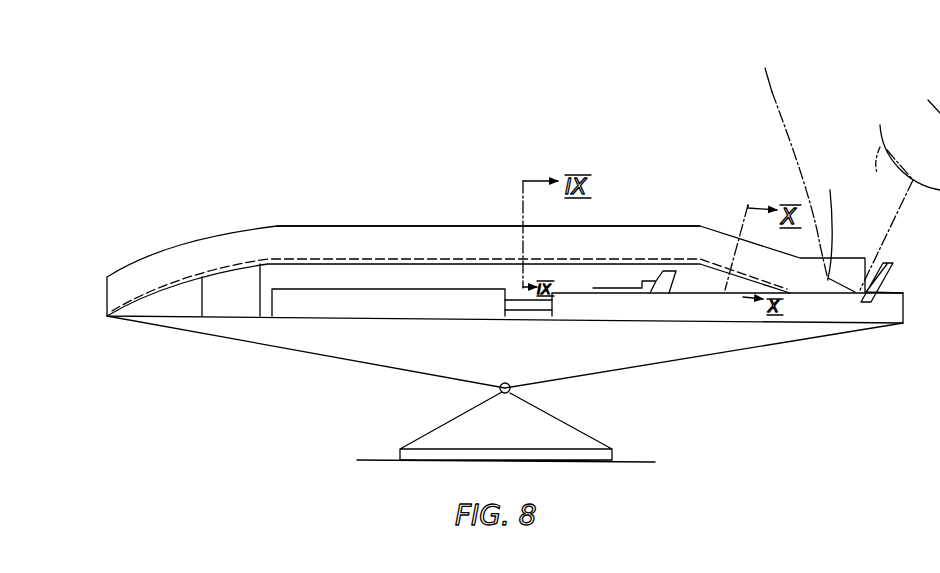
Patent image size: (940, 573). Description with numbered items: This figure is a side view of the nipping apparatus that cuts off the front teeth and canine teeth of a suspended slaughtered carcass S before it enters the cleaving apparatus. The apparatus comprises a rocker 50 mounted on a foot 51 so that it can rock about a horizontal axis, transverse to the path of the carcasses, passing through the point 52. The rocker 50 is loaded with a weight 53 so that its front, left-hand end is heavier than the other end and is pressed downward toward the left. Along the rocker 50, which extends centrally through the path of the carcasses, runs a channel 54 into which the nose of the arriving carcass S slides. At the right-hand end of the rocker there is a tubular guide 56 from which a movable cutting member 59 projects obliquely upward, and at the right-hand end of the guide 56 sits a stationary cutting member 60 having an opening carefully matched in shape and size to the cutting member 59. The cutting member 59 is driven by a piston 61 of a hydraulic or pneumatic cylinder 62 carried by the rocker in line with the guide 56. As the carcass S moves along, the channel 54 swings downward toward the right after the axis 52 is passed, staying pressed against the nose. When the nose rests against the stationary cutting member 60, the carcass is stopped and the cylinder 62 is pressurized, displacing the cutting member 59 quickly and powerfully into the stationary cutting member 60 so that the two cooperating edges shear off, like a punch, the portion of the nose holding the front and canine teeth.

The rocker 50 is at (684, 353).
The foot 51 is at (583, 443).
The point 52 is at (499, 392).
The weight 53 is at (218, 310).
The channel 54 is at (336, 237).
The tubular guide 56 is at (847, 313).
The movable cutting member 59 is at (660, 283).
The stationary cutting member 60 is at (892, 264).
The piston 61 is at (527, 307).
The hydraulic or pneumatic cylinder 62 is at (382, 306).
The suspended carcass S is at (765, 77).